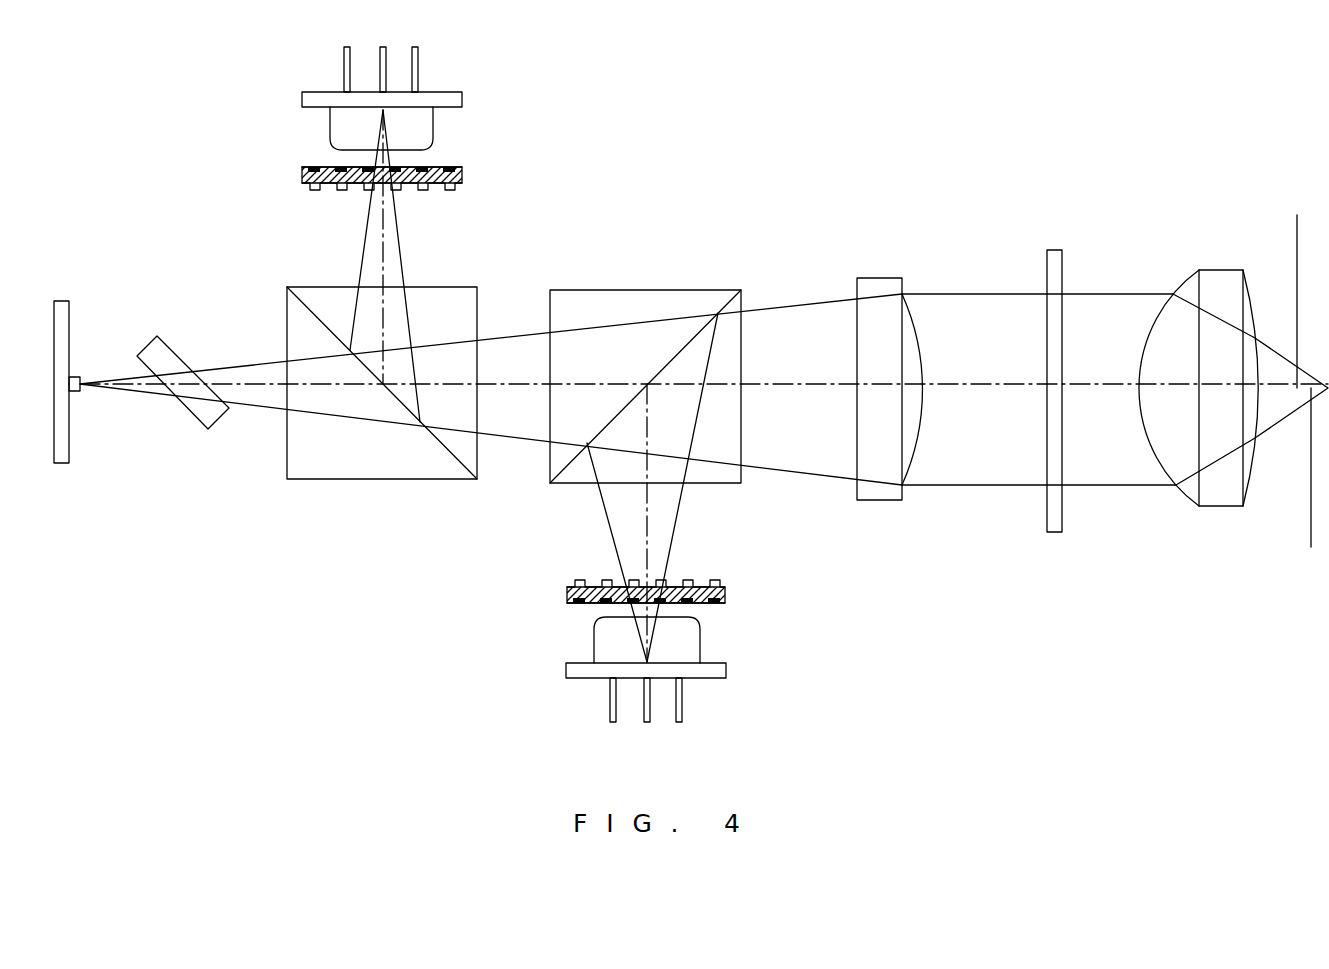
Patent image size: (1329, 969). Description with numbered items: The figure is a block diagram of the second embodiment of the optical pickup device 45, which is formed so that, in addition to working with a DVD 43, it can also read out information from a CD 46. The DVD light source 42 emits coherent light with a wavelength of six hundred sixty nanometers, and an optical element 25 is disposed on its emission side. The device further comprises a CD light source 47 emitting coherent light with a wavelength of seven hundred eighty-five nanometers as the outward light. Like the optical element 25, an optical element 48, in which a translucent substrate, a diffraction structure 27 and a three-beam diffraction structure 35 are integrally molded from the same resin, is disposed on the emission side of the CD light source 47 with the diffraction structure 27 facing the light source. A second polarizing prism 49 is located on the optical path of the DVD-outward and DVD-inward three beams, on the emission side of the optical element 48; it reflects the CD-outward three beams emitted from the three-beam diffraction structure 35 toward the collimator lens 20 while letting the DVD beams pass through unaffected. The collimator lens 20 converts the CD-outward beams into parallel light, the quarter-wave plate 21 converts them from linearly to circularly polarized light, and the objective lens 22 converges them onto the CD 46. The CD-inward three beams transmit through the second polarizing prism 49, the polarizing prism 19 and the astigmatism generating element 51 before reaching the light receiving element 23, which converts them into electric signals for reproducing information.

The polarizing prism 19 is at (368, 480).
The collimator lens 20 is at (866, 278).
The quarter-wave plate 21 is at (1054, 249).
The objective lens 22 is at (1222, 270).
The light receiving element 23 is at (60, 300).
The optical element 25 is at (302, 174).
The diffraction structure 27 is at (446, 158).
The three-beam diffraction structure 35 is at (449, 202).
The DVD light source 42 is at (330, 122).
The DVD 43 is at (1297, 258).
The optical pickup device 45 is at (116, 216).
The CD 46 is at (1311, 502).
The CD light source 47 is at (566, 670).
The optical element 48 is at (567, 595).
The second polarizing prism 49 is at (645, 290).
The astigmatism generating element 51 is at (185, 412).